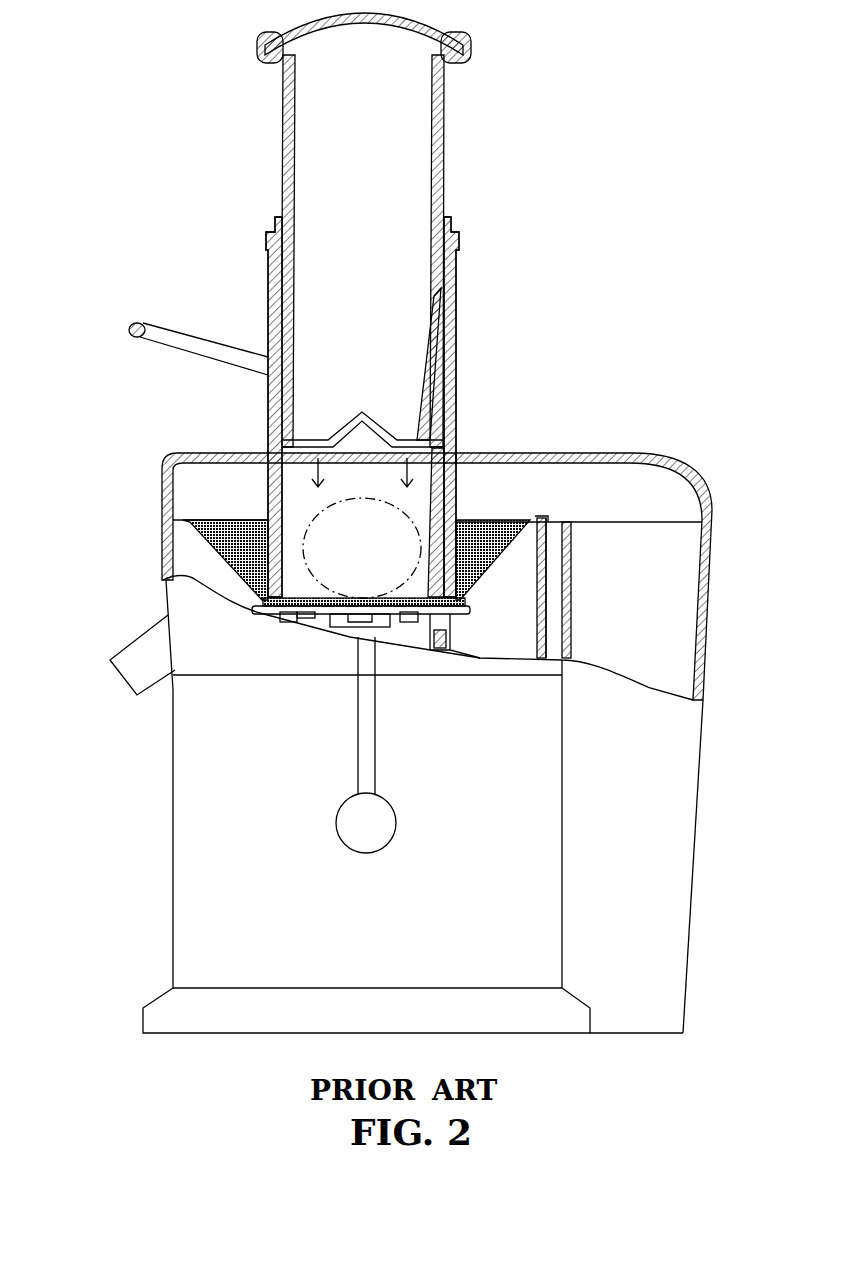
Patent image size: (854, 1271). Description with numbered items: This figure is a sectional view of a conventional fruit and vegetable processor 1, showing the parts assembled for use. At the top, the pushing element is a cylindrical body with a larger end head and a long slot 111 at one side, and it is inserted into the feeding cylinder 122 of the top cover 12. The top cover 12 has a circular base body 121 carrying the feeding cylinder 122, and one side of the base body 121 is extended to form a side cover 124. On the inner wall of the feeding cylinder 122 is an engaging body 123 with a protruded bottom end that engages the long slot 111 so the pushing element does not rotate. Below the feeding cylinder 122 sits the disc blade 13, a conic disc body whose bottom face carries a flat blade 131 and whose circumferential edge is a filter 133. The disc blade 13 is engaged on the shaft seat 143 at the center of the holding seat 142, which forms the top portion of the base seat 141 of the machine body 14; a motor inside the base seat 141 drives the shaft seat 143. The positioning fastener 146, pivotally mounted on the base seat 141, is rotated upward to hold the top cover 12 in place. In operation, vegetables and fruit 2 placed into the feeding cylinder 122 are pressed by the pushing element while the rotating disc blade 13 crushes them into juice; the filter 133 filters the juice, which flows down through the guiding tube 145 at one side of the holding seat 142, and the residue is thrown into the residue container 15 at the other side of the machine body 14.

The fruit and vegetable processor 1 is at (580, 78).
The long slot 111 is at (425, 185).
The feeding cylinder 122 is at (272, 343).
The positioning fastener 146 is at (165, 328).
The top cover 12 is at (687, 345).
The disc blade 13 is at (530, 387).
The engaging body 123 is at (452, 440).
The side cover 124 is at (575, 453).
The vegetables and fruit 2 is at (320, 520).
The base body 121 is at (203, 453).
The filter 133 is at (258, 522).
The flat blade 131 is at (472, 520).
The shaft seat 143 is at (217, 520).
The holding seat 142 is at (183, 605).
The guiding tube 145 is at (123, 655).
The base seat 141 is at (217, 732).
The machine body 14 is at (137, 930).
The residue container 15 is at (673, 873).